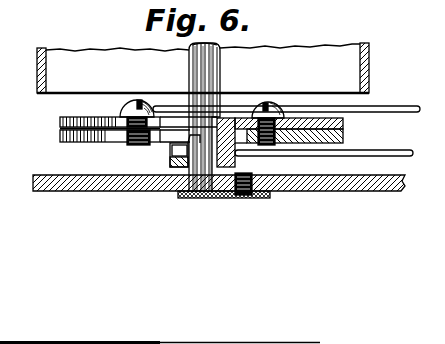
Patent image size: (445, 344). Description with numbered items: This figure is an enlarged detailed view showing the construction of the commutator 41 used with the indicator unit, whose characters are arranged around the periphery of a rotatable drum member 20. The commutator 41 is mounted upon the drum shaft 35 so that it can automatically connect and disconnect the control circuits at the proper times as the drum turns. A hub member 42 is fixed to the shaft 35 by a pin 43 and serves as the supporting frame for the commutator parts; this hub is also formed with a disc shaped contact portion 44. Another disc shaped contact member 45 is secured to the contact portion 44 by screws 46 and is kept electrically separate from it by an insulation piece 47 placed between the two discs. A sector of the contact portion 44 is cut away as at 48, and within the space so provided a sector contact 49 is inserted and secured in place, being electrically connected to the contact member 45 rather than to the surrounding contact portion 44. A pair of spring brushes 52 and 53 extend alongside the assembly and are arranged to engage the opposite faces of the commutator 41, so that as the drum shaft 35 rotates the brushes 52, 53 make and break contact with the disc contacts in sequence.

The rotatable drum member 20 is at (370, 53).
The drum shaft 35 is at (220, 72).
The commutator 41 is at (81, 140).
The hub member 42 is at (229, 168).
The pin 43 is at (178, 167).
The disc shaped contact portion 44 is at (66, 121).
The disc shaped contact member 45 is at (341, 141).
The screws 46 is at (268, 143).
The insulation piece 47 is at (325, 141).
The cut-away sector 48 is at (232, 22).
The sector contact 49 is at (177, 118).
The spring brush 52 is at (378, 107).
The spring brush 53 is at (388, 151).